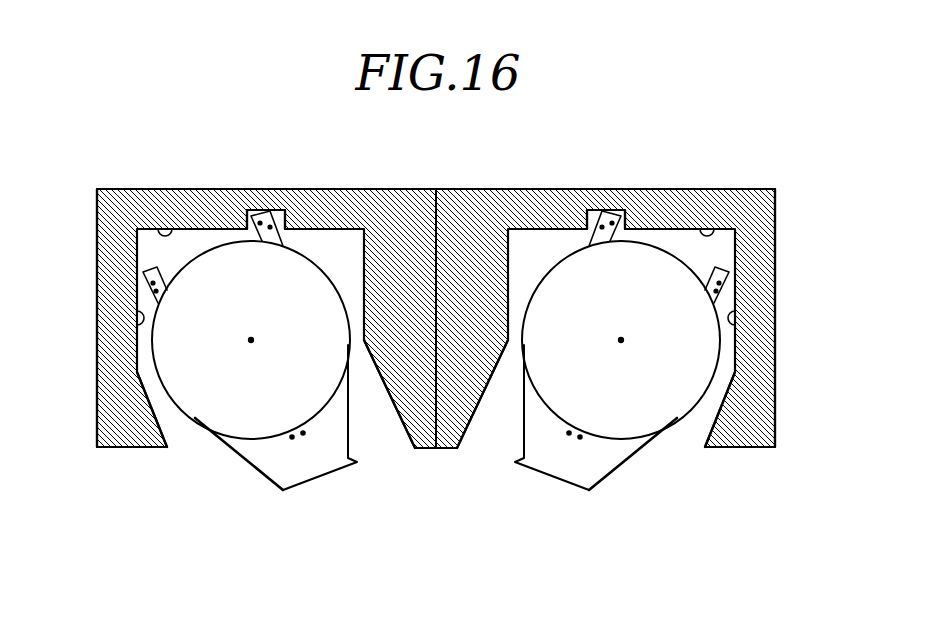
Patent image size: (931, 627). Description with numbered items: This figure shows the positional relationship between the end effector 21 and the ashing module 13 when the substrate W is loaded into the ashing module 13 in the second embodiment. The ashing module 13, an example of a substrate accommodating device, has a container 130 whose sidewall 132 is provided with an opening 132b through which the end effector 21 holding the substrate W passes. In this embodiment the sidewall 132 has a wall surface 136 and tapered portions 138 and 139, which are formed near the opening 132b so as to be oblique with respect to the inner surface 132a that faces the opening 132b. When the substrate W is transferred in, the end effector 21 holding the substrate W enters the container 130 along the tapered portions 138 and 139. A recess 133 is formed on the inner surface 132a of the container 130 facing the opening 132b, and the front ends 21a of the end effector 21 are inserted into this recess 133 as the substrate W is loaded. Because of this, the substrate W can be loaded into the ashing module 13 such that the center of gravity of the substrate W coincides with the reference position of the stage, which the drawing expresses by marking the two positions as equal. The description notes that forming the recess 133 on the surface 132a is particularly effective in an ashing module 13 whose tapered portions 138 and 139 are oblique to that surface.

The ashing module 13 is at (132, 188).
The sidewall 132 is at (97, 263).
The container 130 is at (97, 410).
The recess 133 is at (292, 208).
The inner surface 132a is at (163, 226).
The wall surface 136 is at (141, 318).
The tapered portion 138 is at (163, 427).
The tapered portion 139 is at (386, 404).
The opening 132b is at (453, 447).
The substrate W is at (153, 352).
The end effector 21 is at (233, 456).
The front ends 21a is at (256, 208).